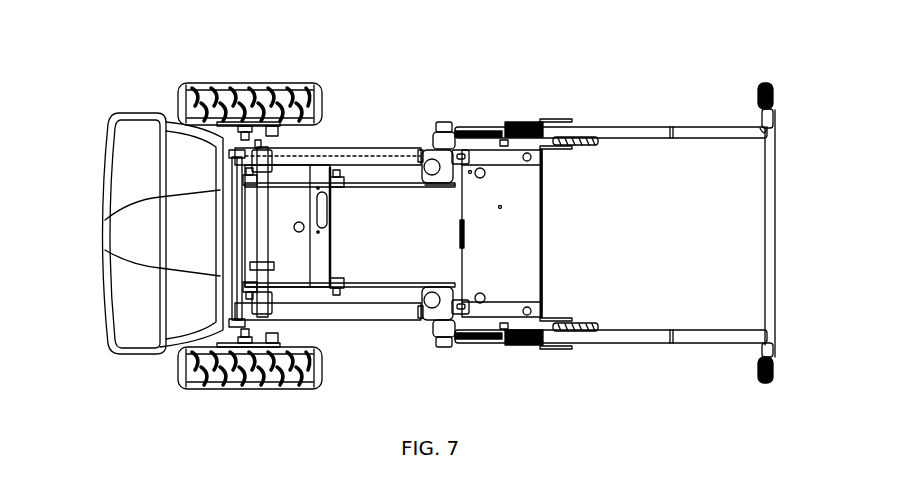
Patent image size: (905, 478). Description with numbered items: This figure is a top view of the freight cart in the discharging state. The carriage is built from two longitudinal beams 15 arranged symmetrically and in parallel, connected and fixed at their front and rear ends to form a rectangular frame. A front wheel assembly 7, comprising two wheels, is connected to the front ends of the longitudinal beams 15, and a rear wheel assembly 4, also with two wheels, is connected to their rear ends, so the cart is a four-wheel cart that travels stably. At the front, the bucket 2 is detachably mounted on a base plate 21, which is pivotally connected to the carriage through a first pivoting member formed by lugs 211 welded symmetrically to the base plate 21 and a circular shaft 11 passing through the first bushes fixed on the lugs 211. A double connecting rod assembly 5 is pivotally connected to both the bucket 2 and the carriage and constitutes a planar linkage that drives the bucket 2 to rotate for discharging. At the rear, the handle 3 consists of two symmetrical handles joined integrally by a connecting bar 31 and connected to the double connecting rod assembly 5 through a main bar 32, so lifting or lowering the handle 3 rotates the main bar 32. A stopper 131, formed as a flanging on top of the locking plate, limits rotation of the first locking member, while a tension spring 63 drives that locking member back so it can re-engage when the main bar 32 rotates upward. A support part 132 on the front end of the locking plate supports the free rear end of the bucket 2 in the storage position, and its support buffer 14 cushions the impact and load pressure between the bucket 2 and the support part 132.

The bucket 2 is at (118, 191).
The front wheel assembly 7 is at (230, 90).
The base plate 21 is at (235, 192).
The lug 211 is at (252, 263).
The circular shaft 11 is at (263, 220).
The longitudinal beam 15 is at (350, 157).
The double connecting rod assembly 5 is at (388, 185).
The support buffer 14 is at (428, 302).
The support part 132 is at (437, 315).
The tension spring 63 is at (478, 338).
The stopper 131 is at (530, 327).
The rear wheel assembly 4 is at (590, 125).
The connecting bar 31 is at (772, 258).
The main bar 32 is at (712, 395).
The handle 3 is at (773, 370).